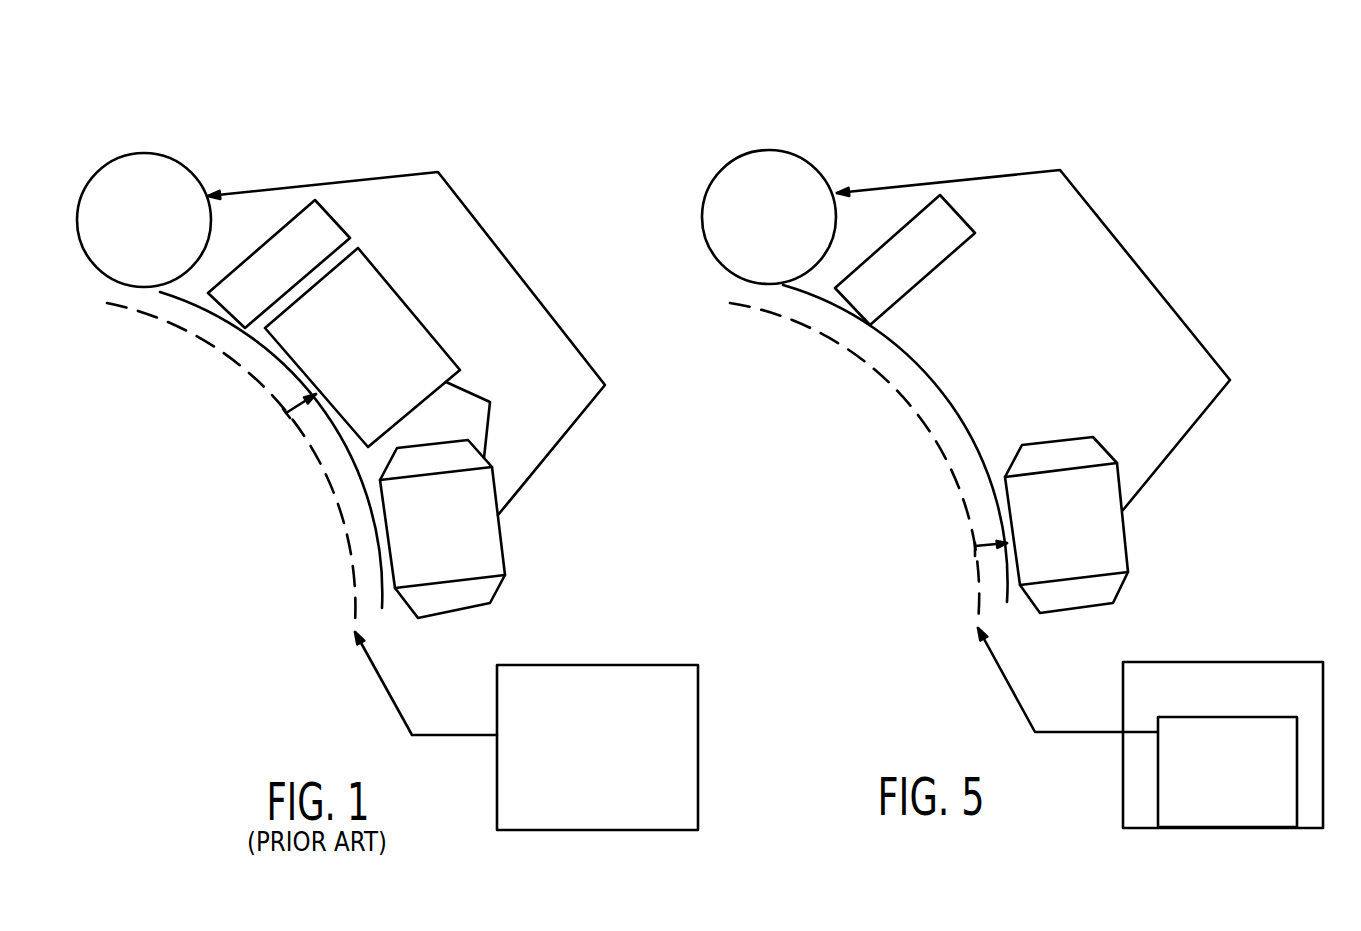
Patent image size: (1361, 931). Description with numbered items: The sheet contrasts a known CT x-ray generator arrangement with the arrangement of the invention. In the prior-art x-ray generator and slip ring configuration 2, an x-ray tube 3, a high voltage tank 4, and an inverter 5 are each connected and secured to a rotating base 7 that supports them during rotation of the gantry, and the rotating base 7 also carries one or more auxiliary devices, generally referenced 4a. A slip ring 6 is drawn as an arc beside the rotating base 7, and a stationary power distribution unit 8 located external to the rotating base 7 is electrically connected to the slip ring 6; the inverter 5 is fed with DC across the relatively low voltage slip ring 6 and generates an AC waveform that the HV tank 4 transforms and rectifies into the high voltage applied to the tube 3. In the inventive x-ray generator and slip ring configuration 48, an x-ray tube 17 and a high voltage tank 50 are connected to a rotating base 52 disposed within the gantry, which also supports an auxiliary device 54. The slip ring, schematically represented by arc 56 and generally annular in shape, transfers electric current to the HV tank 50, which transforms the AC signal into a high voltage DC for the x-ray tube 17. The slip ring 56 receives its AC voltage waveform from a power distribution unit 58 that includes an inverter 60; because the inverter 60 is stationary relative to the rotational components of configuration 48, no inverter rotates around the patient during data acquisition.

In FIG. 1, the x-ray generator and slip ring configuration 2 is at (116, 142).
In FIG. 1, the x-ray tube 3 is at (98, 172).
In FIG. 1, the high voltage tank 4 is at (505, 545).
In FIG. 1, the auxiliary power device 4a is at (338, 213).
In FIG. 1, the inverter 5 is at (413, 307).
In FIG. 1, the slip ring 6 is at (253, 377).
In FIG. 1, the rotating base 7 is at (357, 472).
In FIG. 1, the power distribution unit 8 is at (700, 747).
In FIG. 5, the x-ray generator and slip ring configuration 48 is at (983, 118).
In FIG. 5, the x-ray tube 17 is at (723, 168).
In FIG. 5, the auxiliary device 54 is at (958, 213).
In FIG. 5, the rotating base 52 is at (940, 387).
In FIG. 5, the slip ring 56 is at (932, 435).
In FIG. 5, the high voltage tank 50 is at (1127, 535).
In FIG. 5, the power distribution unit 58 is at (1222, 662).
In FIG. 5, the inverter 60 is at (1157, 773).